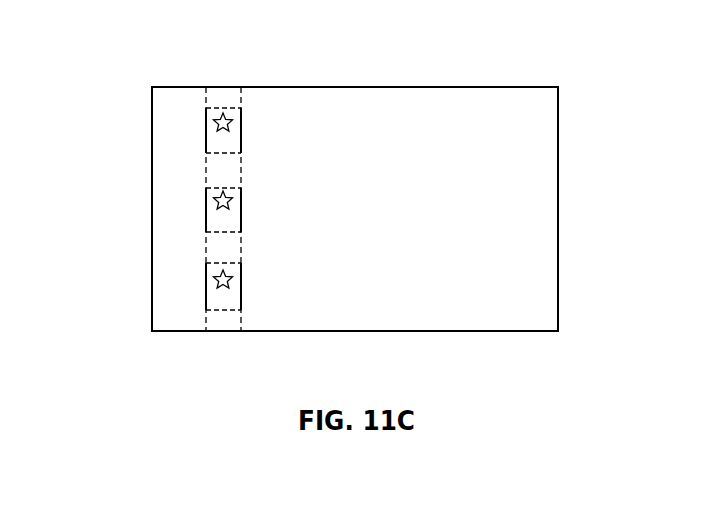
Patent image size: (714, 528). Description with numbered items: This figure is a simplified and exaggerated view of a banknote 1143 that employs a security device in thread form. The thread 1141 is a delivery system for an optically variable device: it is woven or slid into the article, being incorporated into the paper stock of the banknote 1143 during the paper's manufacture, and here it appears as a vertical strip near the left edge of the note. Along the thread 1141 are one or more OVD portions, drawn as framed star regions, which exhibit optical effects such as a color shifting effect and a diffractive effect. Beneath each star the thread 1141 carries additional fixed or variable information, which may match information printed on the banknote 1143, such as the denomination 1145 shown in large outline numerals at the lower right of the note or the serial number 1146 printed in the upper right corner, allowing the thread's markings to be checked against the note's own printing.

The security thread 1141 is at (224, 96).
The banknote 1143 is at (332, 80).
The denomination 1145 is at (511, 310).
The serial number 1146 is at (503, 93).